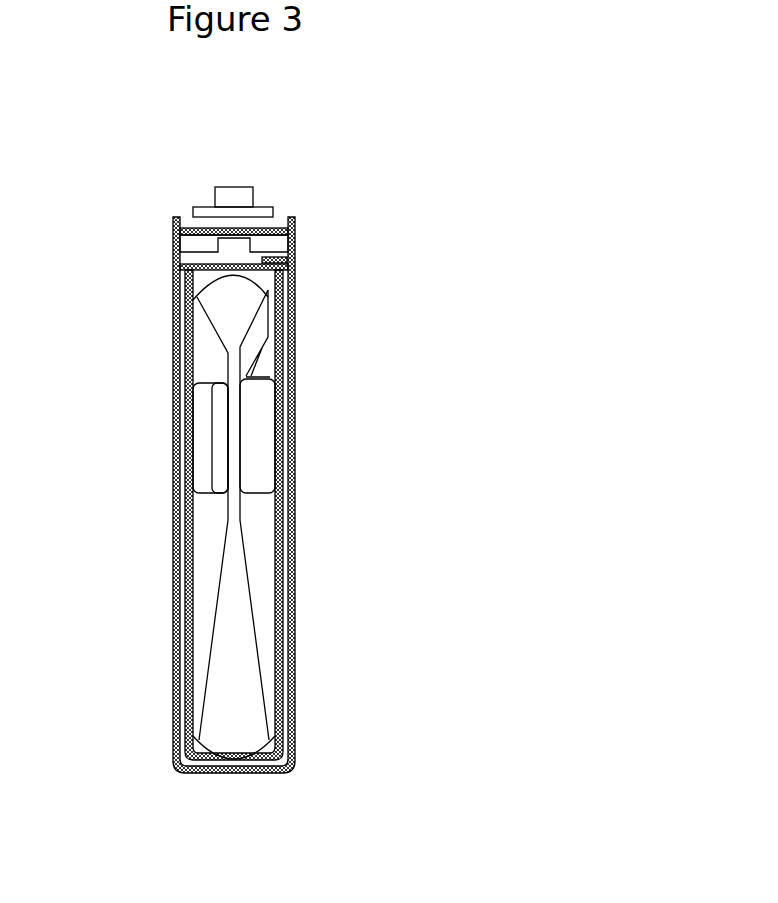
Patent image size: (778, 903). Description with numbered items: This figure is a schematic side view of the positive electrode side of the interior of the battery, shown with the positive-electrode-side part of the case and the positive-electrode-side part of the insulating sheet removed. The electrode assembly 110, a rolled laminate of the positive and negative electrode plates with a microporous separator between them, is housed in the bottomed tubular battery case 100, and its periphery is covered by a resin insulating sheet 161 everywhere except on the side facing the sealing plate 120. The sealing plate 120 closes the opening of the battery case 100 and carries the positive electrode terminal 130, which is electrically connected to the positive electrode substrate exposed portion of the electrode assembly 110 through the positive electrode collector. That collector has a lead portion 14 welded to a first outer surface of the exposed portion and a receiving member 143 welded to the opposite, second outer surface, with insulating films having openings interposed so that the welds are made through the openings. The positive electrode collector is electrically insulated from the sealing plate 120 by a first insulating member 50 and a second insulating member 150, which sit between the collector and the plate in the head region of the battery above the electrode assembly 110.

The battery case 100 is at (175, 690).
The insulating sheet 161 is at (178, 575).
The sealing plate 120 is at (281, 218).
The positive electrode terminal 130 is at (233, 196).
The second insulating member 150 is at (282, 238).
The first insulating member 50 is at (295, 262).
The electrode assembly 110 is at (210, 525).
The lead portion 14 is at (288, 352).
The receiving member 143 is at (260, 430).